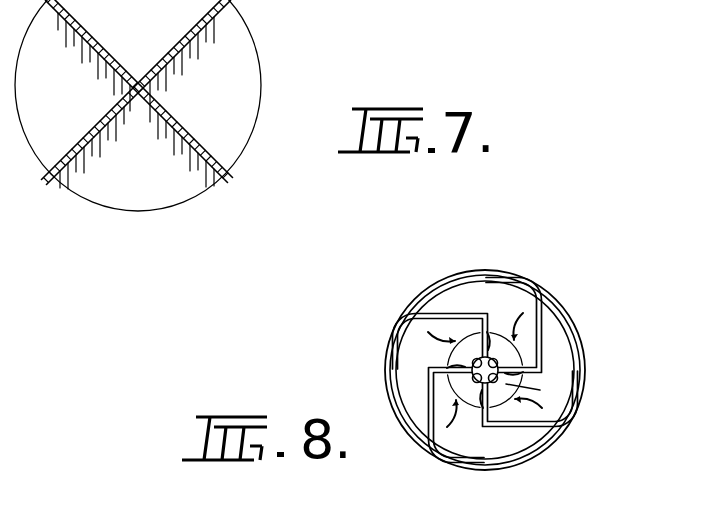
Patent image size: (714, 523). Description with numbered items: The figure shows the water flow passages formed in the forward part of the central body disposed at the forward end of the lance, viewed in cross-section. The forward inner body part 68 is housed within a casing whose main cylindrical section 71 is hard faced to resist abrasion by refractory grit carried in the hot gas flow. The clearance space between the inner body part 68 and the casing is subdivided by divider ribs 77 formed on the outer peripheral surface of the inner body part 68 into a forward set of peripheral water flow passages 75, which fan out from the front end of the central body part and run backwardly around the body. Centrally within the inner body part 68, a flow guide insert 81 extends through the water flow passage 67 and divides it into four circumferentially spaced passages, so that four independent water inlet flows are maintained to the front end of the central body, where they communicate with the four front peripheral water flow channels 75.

In FIG. 8, the water flow passage 67 is at (477, 424).
In FIG. 8, the forward inner body part 68 is at (471, 371).
In FIG. 8, the main cylindrical section 71 is at (556, 302).
In FIG. 8, the forward set of peripheral water flow passages 75 is at (485, 297).
In FIG. 8, the divider ribs 77 is at (452, 314).
In FIG. 7, the flow guide insert 81 is at (222, 96).
In FIG. 8, the flow guide insert 81 is at (506, 384).